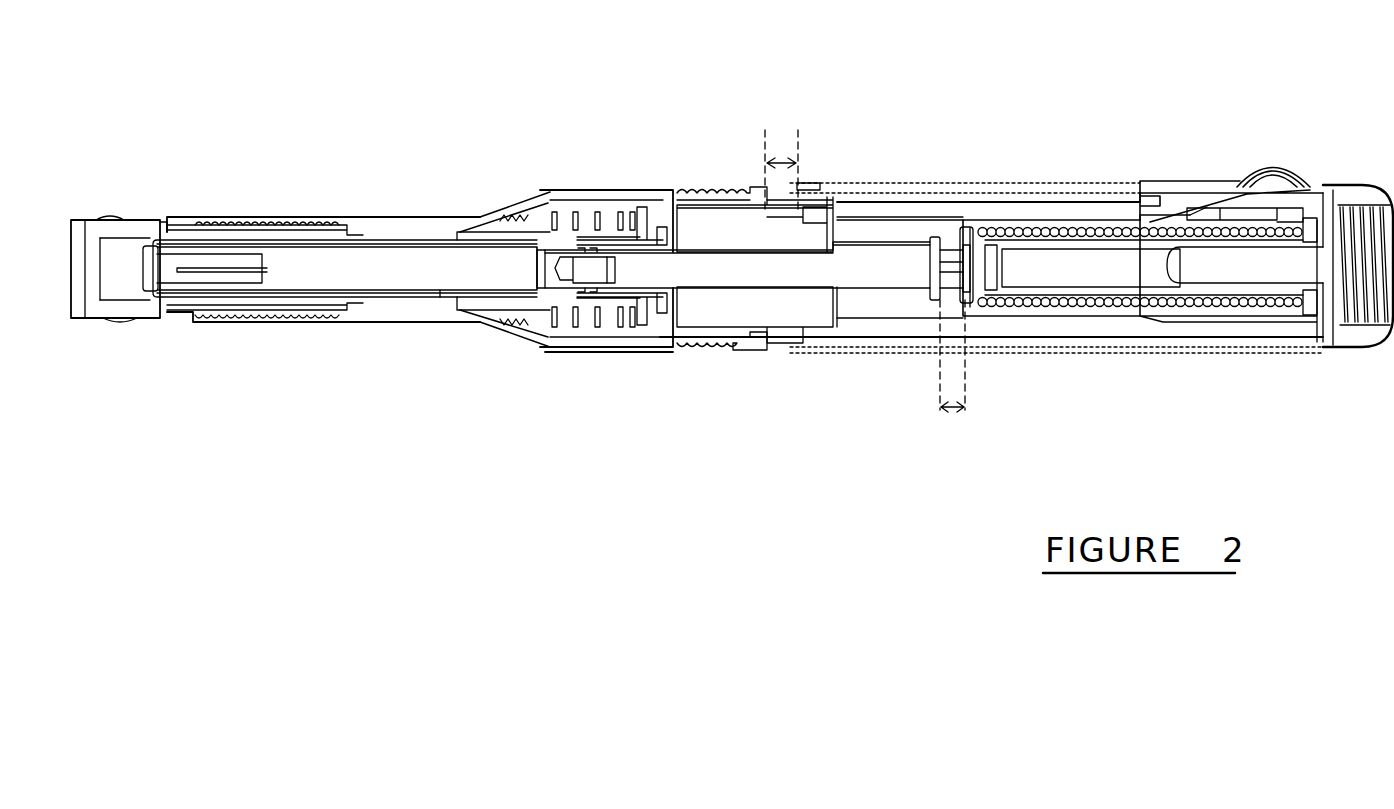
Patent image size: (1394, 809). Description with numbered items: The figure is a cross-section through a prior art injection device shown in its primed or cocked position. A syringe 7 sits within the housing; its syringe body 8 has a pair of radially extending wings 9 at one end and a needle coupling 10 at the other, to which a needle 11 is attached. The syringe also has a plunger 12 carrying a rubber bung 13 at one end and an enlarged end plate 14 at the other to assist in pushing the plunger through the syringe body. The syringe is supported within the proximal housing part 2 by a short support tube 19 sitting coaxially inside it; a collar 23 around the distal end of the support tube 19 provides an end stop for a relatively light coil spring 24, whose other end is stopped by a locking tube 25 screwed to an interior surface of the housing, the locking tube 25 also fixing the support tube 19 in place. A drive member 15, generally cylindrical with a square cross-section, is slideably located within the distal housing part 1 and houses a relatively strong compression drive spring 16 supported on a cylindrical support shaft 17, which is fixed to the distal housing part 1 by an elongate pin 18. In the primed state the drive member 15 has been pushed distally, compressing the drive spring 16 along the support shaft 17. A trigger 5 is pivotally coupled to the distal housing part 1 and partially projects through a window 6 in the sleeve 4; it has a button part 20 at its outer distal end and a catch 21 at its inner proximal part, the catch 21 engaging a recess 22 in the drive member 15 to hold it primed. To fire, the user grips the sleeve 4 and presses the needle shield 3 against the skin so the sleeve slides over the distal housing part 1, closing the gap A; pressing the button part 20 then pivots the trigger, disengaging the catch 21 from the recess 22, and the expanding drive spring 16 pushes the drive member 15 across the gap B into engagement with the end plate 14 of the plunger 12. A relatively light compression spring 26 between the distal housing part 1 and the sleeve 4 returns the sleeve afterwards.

The distal housing part 1 is at (900, 327).
The proximal housing part 2 is at (375, 218).
The needle shield 3 is at (115, 218).
The sleeve 4 is at (875, 187).
The trigger 5 is at (1207, 183).
The window 6 is at (1320, 183).
The syringe 7 is at (407, 278).
The syringe body 8 is at (440, 290).
The wings 9 is at (662, 245).
The needle coupling 10 is at (280, 255).
The needle 11 is at (210, 265).
The plunger 12 is at (767, 277).
The rubber bung 13 is at (567, 262).
The end plate 14 is at (940, 235).
The drive member 15 is at (1067, 317).
The drive spring 16 is at (1048, 232).
The support shaft 17 is at (1123, 287).
The elongate pin 18 is at (1270, 275).
The support tube 19 is at (600, 245).
The button part 20 is at (1277, 183).
The catch 21 is at (1120, 225).
The recess 22 is at (1207, 207).
The collar 23 is at (640, 330).
The coil spring 24 is at (577, 328).
The locking tube 25 is at (500, 210).
The compression spring 26 is at (1383, 325).
The gap A is at (792, 154).
The gap B is at (954, 380).